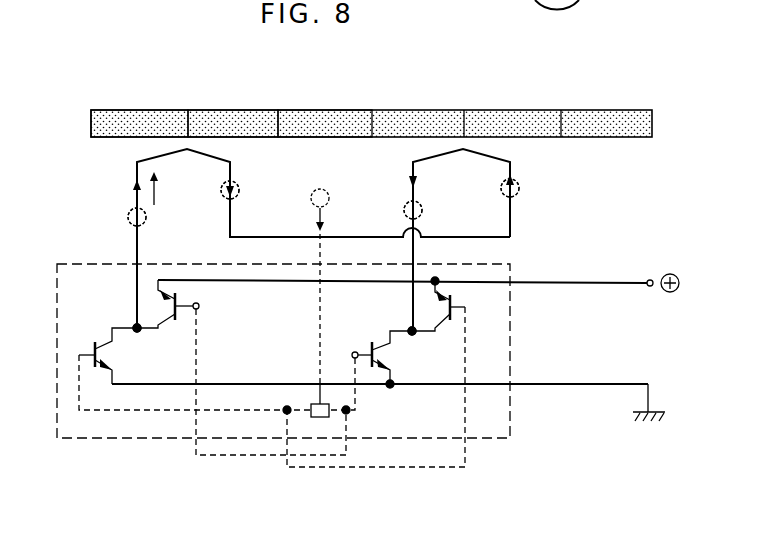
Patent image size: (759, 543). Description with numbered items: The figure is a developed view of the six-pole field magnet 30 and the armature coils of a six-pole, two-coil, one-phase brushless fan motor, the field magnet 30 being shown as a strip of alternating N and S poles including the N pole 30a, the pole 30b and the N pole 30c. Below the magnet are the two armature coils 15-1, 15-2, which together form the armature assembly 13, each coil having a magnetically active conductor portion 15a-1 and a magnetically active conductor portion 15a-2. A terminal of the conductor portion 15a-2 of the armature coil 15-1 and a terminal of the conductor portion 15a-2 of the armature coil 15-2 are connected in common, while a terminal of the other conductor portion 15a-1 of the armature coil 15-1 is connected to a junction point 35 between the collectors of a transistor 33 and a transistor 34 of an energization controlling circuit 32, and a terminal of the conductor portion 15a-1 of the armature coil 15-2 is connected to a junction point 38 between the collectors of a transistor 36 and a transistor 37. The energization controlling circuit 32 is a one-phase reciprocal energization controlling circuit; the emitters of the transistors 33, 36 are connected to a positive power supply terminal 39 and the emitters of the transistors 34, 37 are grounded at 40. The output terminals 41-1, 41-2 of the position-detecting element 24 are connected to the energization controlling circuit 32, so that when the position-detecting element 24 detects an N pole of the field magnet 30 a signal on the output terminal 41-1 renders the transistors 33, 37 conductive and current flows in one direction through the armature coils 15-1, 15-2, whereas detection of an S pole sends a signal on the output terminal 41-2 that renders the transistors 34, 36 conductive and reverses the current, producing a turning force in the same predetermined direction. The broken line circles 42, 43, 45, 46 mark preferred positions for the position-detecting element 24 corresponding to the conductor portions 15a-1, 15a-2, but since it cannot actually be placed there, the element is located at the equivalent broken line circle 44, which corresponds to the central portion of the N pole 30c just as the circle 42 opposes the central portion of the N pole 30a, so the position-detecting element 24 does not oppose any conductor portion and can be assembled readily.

The field magnet 30 is at (397, 98).
The N pole 30a is at (112, 117).
The magnet pole segment 30b is at (204, 117).
The N pole 30c is at (297, 117).
The stator yoke assembly 13 is at (623, 173).
The armature coil 15-1 is at (137, 165).
The armature coil 15-2 is at (415, 168).
The magnetically active conductor portion 15a-1 is at (128, 214).
The magnetically active conductor portion 15a-2 is at (232, 218).
The broken line circle 42 is at (147, 222).
The broken line circle 43 is at (240, 184).
The broken line circle 44 is at (323, 188).
The broken line circle 45 is at (424, 214).
The broken line circle 46 is at (521, 187).
The energization controlling circuit 32 is at (511, 264).
The transistor 33 is at (176, 287).
The transistor 34 is at (107, 352).
The junction point 35 is at (134, 325).
The transistor 36 is at (445, 290).
The transistor 37 is at (383, 353).
The junction point 38 is at (410, 328).
The position-detecting element 24 is at (320, 417).
The output terminal 41-1 is at (338, 418).
The output terminal 41-2 is at (300, 418).
The positive power supply terminal 39 is at (651, 278).
The ground 40 is at (667, 411).